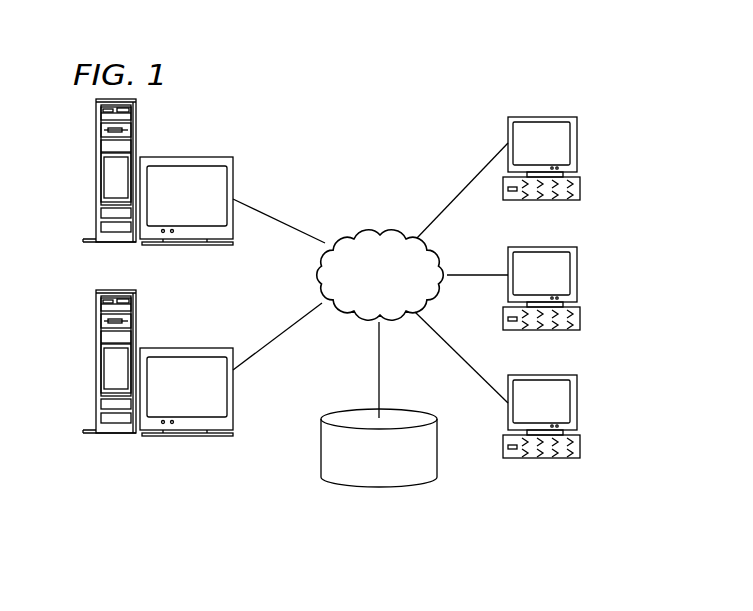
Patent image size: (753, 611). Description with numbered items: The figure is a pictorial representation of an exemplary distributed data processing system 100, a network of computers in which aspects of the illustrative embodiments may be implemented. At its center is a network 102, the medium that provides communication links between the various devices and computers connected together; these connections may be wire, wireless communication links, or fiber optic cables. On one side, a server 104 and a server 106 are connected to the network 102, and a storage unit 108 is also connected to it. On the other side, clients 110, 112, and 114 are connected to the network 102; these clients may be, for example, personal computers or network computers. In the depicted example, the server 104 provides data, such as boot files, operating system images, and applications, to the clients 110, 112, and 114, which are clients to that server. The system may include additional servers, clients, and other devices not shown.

The distributed data processing system 100 is at (422, 128).
The network 102 is at (352, 232).
The server 104 is at (96, 173).
The server 106 is at (96, 364).
The storage unit 108 is at (363, 488).
The client 110 is at (577, 145).
The client 112 is at (577, 275).
The client 114 is at (577, 403).